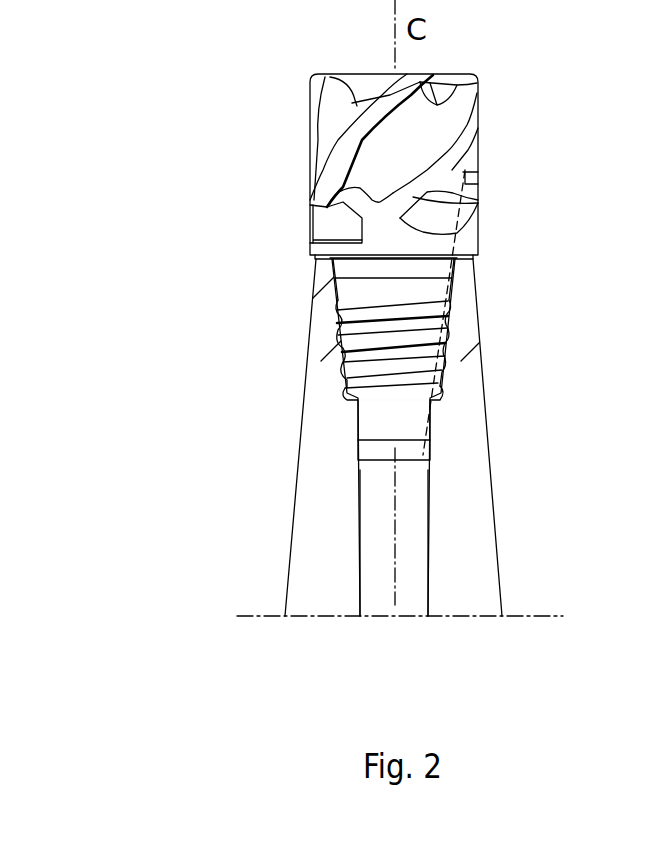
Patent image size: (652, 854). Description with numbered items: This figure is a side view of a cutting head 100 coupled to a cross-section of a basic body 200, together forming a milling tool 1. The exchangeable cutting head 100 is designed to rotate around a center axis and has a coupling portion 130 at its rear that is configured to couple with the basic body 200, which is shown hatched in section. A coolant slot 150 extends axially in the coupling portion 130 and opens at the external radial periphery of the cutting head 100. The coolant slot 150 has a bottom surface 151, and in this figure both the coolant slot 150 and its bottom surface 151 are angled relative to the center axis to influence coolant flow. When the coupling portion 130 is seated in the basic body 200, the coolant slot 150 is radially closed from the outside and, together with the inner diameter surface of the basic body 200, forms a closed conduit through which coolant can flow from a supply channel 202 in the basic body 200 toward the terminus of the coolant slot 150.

The milling tool 1 is at (160, 77).
The cutting head 100 is at (320, 167).
The coupling portion 130 is at (321, 359).
The coolant slot 150 is at (450, 290).
The bottom surface 151 is at (468, 371).
The basic body 200 is at (300, 407).
The supply channel 202 is at (422, 522).